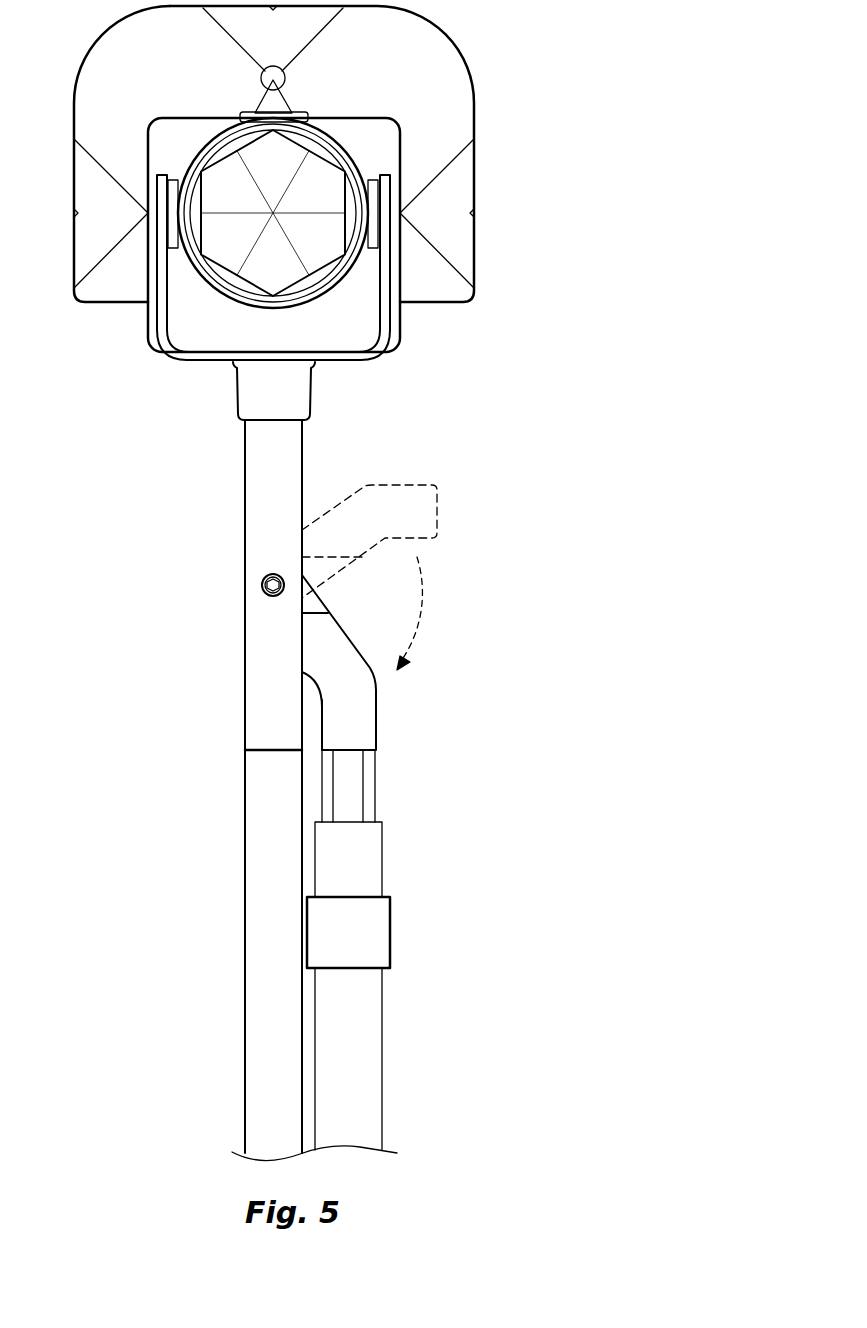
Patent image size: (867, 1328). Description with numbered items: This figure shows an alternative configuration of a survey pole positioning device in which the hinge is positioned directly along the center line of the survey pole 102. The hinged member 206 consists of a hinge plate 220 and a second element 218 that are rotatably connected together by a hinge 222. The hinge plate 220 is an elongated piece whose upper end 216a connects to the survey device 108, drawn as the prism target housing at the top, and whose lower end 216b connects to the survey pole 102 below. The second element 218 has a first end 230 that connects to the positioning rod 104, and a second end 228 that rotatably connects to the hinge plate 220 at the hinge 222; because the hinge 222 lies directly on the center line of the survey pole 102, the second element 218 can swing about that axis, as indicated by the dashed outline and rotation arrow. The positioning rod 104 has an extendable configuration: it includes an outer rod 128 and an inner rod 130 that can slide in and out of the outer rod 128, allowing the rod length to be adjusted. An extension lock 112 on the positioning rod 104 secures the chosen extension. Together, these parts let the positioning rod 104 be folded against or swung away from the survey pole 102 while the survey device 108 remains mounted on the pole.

The survey device 108 is at (472, 90).
The hinged member 206 is at (155, 517).
The upper end 216a is at (297, 448).
The lower end 216b is at (245, 720).
The survey pole 102 is at (245, 818).
The hinge plate 220 is at (245, 557).
The hinge 222 is at (263, 591).
The second end 228 is at (303, 605).
The second element 218 is at (357, 652).
The first end 230 is at (362, 728).
The inner rod 130 is at (377, 795).
The outer rod 128 is at (383, 865).
The extension lock 112 is at (392, 932).
The positioning rod 104 is at (382, 1040).